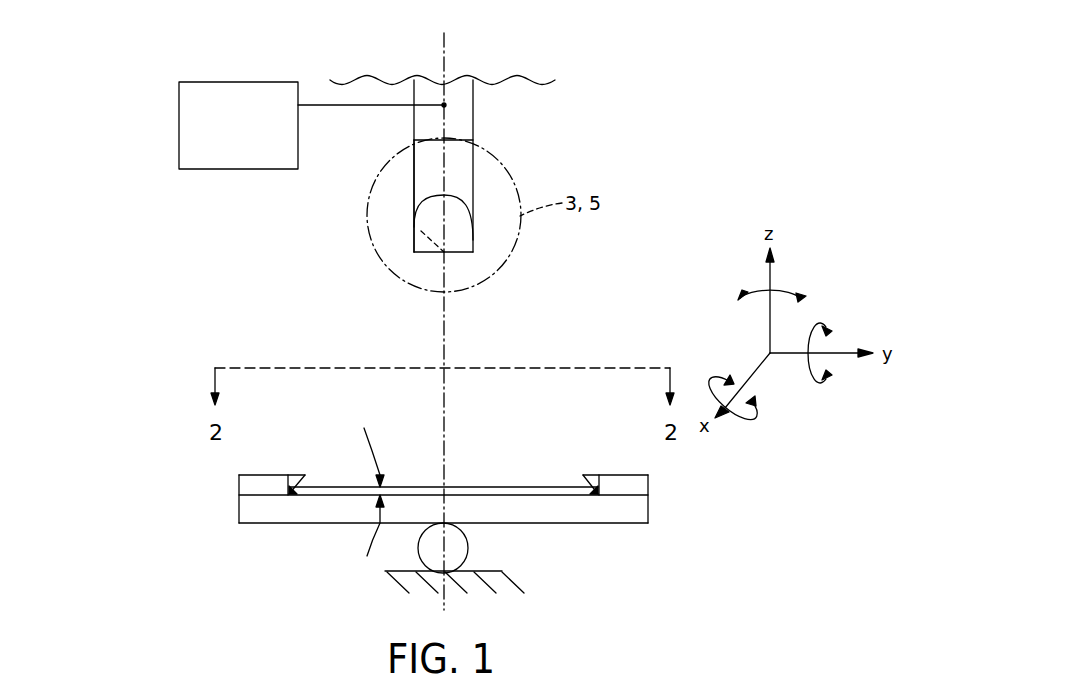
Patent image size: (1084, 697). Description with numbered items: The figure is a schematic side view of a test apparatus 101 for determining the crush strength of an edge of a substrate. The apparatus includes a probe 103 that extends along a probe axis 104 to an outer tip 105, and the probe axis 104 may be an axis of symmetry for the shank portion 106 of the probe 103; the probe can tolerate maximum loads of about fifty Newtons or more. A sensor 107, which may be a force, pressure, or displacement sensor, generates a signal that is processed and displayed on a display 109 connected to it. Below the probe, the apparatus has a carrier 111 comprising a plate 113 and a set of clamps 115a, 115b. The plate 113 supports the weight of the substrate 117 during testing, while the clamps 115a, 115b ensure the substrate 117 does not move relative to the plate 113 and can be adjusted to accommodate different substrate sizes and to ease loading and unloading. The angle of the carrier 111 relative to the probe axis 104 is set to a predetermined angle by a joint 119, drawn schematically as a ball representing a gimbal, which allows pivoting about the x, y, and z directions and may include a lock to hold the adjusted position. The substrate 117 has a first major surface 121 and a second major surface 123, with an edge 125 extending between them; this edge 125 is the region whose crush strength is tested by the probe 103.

The test apparatus 101 is at (652, 105).
The probe 103 is at (473, 165).
The probe axis 104 is at (448, 345).
The outer tip 105 is at (454, 253).
The shank portion 106 is at (412, 164).
The sensor 107 is at (466, 97).
The display 109 is at (178, 127).
The carrier 111 is at (510, 458).
The plate 113 is at (649, 507).
The clamp 115a is at (262, 476).
The clamp 115b is at (618, 476).
The substrate 117 is at (338, 487).
The joint 119 is at (468, 545).
The first major surface 121 is at (368, 445).
The second major surface 123 is at (368, 540).
The edge 125 is at (598, 494).